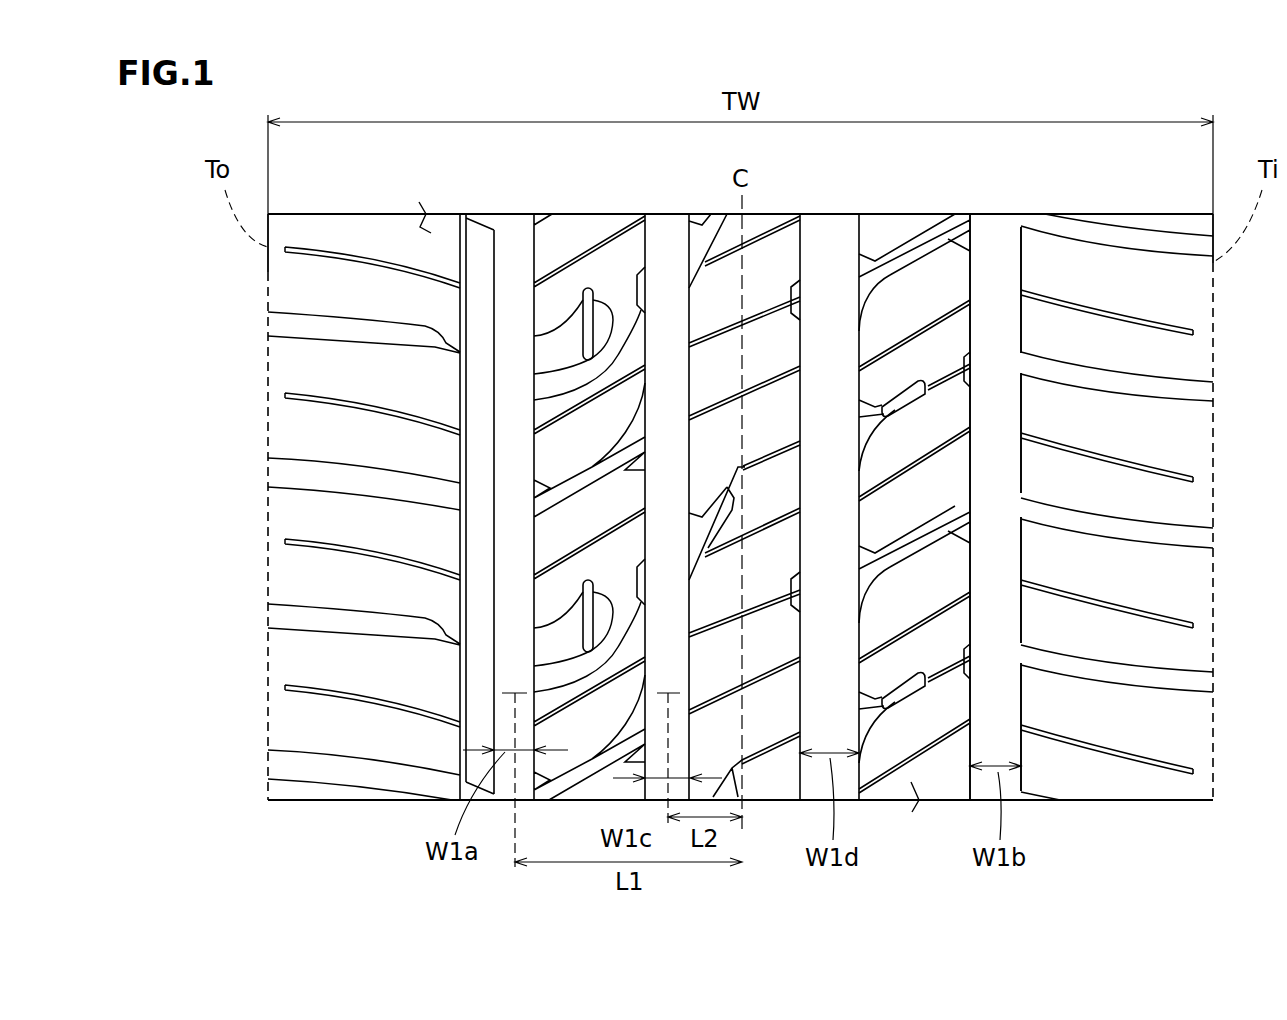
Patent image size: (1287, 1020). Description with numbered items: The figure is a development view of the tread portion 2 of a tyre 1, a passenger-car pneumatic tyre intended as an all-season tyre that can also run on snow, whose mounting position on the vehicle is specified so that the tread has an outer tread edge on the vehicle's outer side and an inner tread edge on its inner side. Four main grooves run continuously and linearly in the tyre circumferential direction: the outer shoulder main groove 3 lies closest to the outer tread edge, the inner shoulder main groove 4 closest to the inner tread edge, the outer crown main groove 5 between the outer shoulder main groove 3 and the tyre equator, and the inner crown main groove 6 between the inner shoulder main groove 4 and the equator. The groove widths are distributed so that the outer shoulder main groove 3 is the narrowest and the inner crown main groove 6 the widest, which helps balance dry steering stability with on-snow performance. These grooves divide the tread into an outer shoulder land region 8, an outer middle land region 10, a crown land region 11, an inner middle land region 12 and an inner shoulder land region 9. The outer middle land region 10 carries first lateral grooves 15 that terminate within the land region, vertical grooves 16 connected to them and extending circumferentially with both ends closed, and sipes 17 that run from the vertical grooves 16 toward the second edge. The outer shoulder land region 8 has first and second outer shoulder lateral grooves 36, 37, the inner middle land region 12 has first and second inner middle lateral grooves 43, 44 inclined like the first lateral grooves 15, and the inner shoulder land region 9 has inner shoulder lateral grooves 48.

The tyre 1 is at (1076, 203).
The tread portion 2 is at (714, 202).
The outer shoulder main groove 3 is at (516, 256).
The inner shoulder main groove 4 is at (995, 258).
The outer crown main groove 5 is at (669, 240).
The inner crown main groove 6 is at (831, 250).
The outer shoulder land region 8 is at (325, 478).
The inner shoulder land region 9 is at (1154, 478).
The outer middle land region 10 is at (417, 504).
The crown land region 11 is at (777, 244).
The inner middle land region 12 is at (1073, 478).
The first lateral groove 15 is at (544, 345).
The vertical groove 16 is at (573, 356).
The sipe 17 is at (595, 385).
The first outer shoulder lateral groove 36 is at (333, 482).
The second outer shoulder lateral groove 37 is at (341, 626).
The first inner middle lateral groove 43 is at (930, 543).
The second inner middle lateral groove 44 is at (910, 410).
The inner shoulder lateral groove 48 is at (1134, 376).